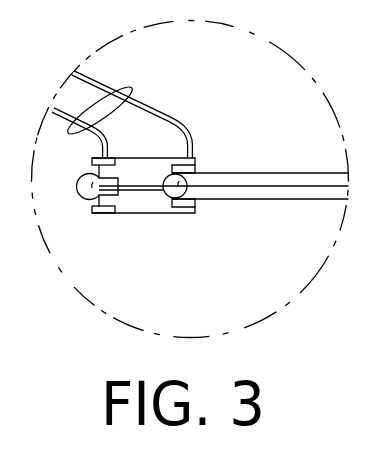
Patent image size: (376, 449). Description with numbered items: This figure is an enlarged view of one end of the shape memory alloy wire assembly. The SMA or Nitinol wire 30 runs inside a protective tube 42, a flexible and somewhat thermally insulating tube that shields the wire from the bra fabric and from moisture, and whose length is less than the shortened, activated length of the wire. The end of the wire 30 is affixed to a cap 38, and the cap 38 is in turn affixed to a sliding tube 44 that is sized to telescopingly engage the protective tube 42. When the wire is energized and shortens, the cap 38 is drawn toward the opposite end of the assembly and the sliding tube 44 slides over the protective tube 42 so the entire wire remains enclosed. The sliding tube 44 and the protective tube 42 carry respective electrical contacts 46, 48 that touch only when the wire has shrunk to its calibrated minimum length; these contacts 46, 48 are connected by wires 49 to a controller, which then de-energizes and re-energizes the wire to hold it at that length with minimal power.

The SMA or Nitinol wire 30 is at (279, 182).
The cap 38 is at (95, 185).
The protective tube 42 is at (224, 173).
The sliding tube 44 is at (155, 213).
The electrical contact 46 is at (117, 212).
The electrical contact 48 is at (185, 208).
The wires 49 is at (131, 89).